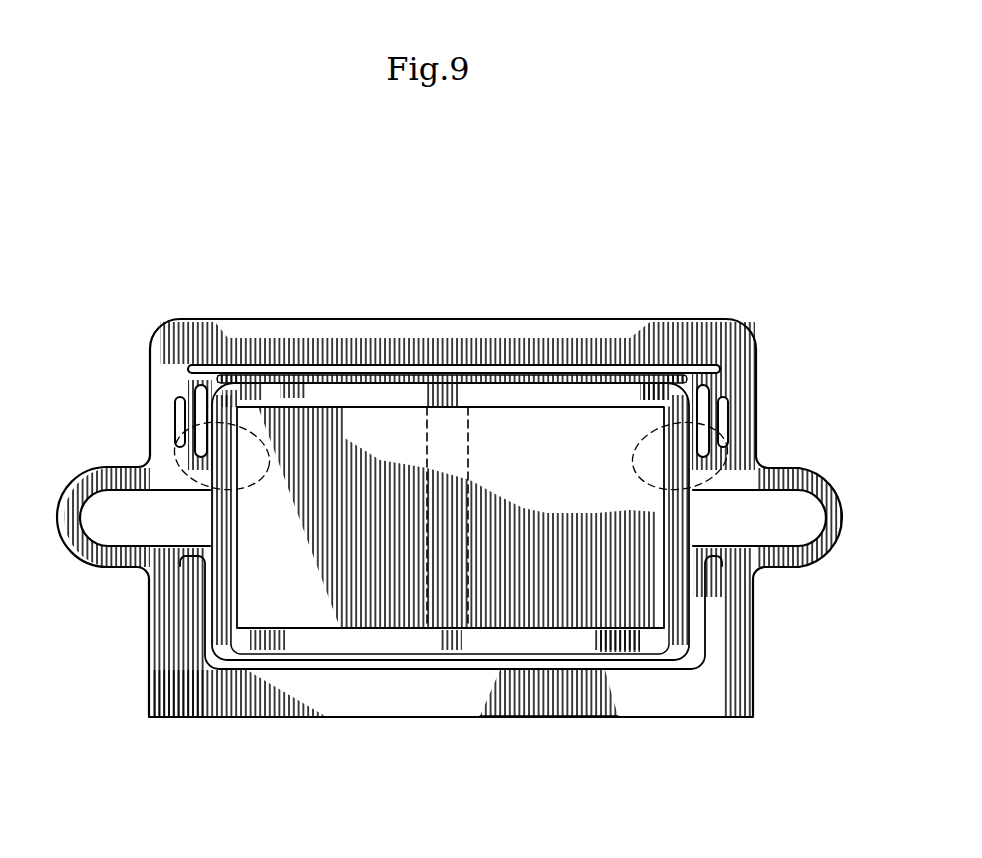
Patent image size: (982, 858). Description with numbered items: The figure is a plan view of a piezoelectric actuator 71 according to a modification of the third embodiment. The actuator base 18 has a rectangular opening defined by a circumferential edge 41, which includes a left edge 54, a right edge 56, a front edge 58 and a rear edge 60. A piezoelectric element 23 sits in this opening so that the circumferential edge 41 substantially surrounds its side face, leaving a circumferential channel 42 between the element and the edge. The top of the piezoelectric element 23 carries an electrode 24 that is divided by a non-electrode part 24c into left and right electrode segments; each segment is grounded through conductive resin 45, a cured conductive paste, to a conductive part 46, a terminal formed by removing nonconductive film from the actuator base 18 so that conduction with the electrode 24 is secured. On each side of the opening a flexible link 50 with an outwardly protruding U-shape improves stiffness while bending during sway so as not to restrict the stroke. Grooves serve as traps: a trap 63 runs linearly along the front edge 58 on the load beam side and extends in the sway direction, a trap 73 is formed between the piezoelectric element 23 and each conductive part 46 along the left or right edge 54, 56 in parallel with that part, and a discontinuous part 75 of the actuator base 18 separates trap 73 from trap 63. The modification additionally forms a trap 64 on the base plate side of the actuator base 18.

The piezoelectric actuator 71 is at (641, 112).
The actuator base 18 is at (557, 332).
The piezoelectric element 23 is at (346, 420).
The electrode 24 is at (490, 595).
The non-electrode part 24c is at (425, 578).
The circumferential edge 41 is at (313, 648).
The circumferential channel 42 is at (607, 638).
The conductive resin 45 is at (240, 368).
The conductive part 46 is at (178, 423).
The flexible link 50 is at (78, 563).
The left edge 54 is at (220, 588).
The right edge 56 is at (680, 603).
The front edge 58 is at (436, 392).
The rear edge 60 is at (580, 647).
The trap 63 is at (487, 368).
The trap 64 is at (548, 668).
The trap 73 is at (213, 400).
The discontinuous part 75 is at (188, 376).